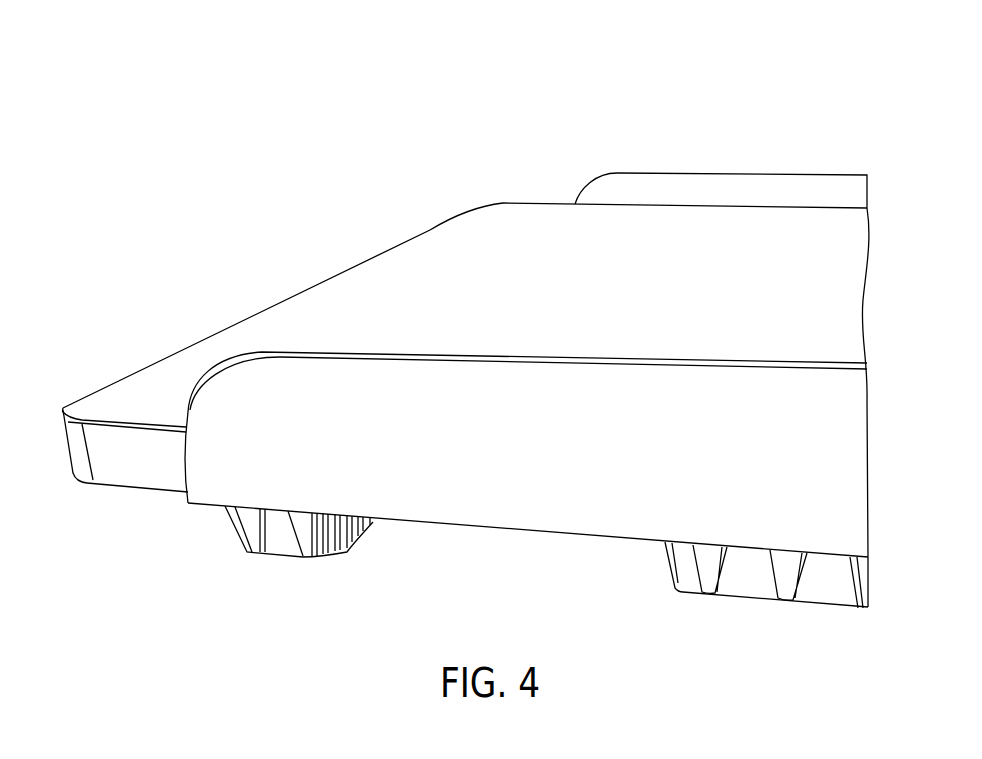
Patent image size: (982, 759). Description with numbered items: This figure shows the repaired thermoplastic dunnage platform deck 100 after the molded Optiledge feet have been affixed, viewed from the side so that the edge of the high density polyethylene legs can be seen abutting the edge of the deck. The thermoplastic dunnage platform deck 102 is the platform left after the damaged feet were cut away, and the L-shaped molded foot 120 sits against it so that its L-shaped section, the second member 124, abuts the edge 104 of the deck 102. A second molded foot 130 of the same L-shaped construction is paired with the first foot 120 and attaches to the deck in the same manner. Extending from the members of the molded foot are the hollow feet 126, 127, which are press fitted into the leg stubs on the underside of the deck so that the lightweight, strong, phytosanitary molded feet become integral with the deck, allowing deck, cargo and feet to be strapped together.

The thermoplastic dunnage platform deck 100 is at (370, 103).
The thermoplastic dunnage platform deck 102 is at (658, 298).
The edge 104 is at (150, 462).
The molded foot 120 is at (260, 345).
The second member 124 is at (477, 410).
The hollow foot 126 is at (328, 557).
The hollow foot 127 is at (685, 567).
The molded foot 130 is at (655, 158).